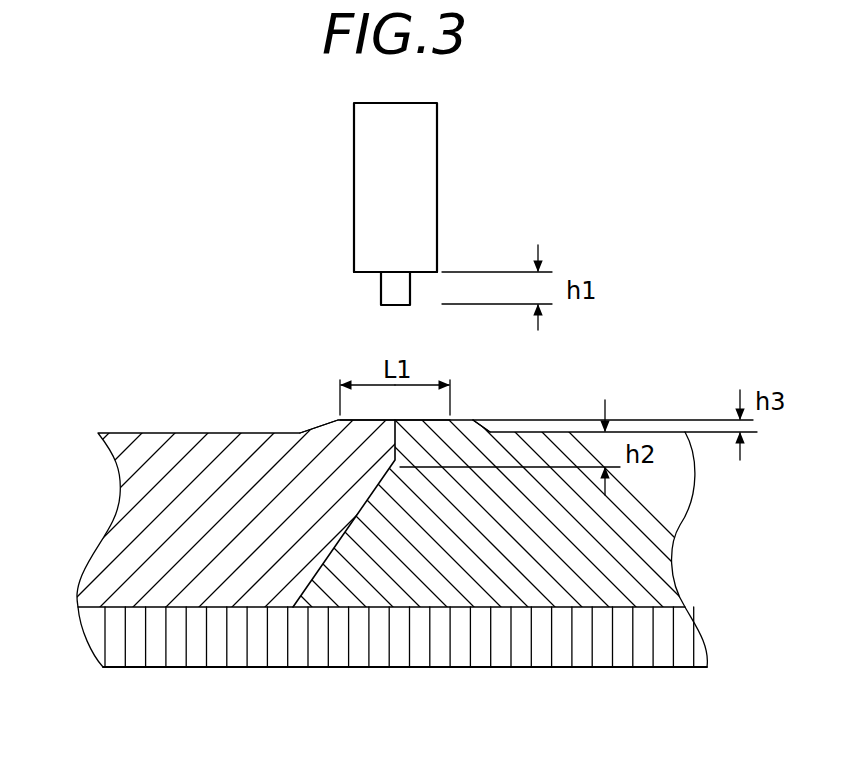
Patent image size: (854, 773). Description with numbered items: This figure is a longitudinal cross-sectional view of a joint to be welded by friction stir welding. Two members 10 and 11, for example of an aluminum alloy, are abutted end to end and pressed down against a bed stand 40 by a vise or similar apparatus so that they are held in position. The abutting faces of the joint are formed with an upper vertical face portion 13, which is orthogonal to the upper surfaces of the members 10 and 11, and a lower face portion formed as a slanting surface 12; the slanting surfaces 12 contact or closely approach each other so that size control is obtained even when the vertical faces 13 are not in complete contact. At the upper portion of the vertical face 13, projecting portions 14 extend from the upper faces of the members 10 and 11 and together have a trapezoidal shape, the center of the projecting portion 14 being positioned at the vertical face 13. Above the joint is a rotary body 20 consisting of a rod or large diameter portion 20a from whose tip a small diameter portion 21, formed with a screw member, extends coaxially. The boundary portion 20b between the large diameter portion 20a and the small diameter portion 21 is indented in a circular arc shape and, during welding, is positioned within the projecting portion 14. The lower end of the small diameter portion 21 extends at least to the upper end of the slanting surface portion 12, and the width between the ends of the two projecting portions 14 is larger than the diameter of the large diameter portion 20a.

The member 10 is at (378, 500).
The member 11 is at (640, 424).
The slanting surface portion 12 is at (337, 543).
The vertical face portion 13 is at (413, 420).
The projecting portion 14 is at (330, 420).
The rotary body 20 is at (390, 204).
The large diameter portion 20a is at (381, 176).
The boundary portion 20b is at (364, 273).
The small diameter portion 21 is at (410, 291).
The bed stand 40 is at (555, 667).